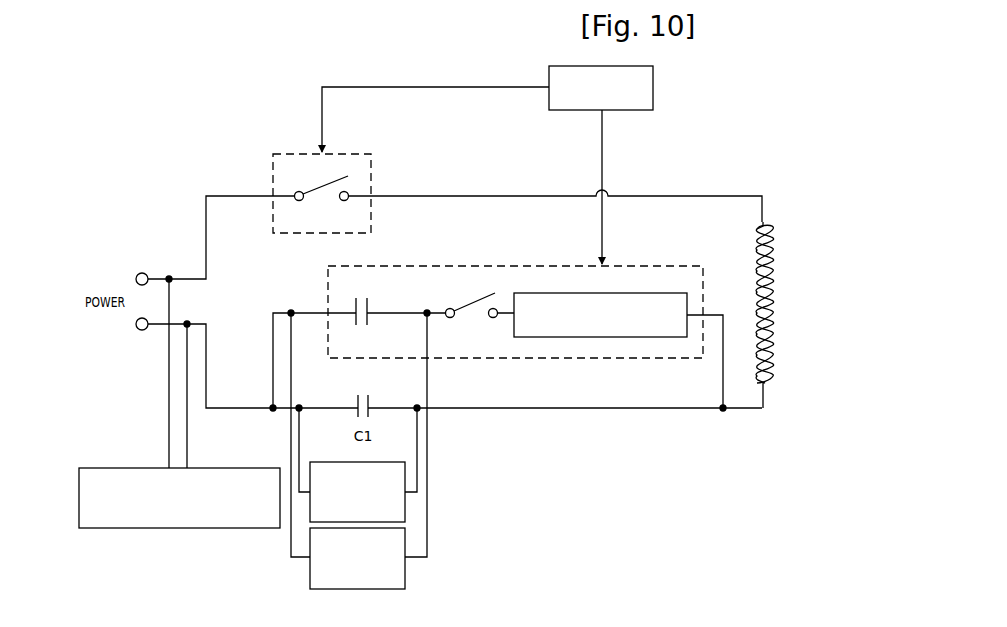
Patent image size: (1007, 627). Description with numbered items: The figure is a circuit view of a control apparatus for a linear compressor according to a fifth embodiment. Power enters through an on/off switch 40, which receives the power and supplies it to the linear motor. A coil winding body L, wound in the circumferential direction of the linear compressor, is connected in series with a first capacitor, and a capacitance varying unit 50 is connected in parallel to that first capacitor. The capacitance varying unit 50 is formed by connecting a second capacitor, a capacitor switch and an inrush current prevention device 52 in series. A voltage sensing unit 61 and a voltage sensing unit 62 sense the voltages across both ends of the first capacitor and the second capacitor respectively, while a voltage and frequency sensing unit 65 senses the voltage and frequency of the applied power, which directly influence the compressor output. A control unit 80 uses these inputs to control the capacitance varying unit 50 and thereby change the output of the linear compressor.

The on/off switch 40 is at (273, 154).
The capacitance varying unit 50 is at (494, 323).
The inrush current prevention device 52 is at (650, 292).
The voltage sensing unit 61 is at (405, 482).
The voltage sensing unit 62 is at (405, 572).
The voltage and frequency sensing unit 65 is at (79, 492).
The control unit 80 is at (655, 87).
The coil winding body L is at (784, 257).